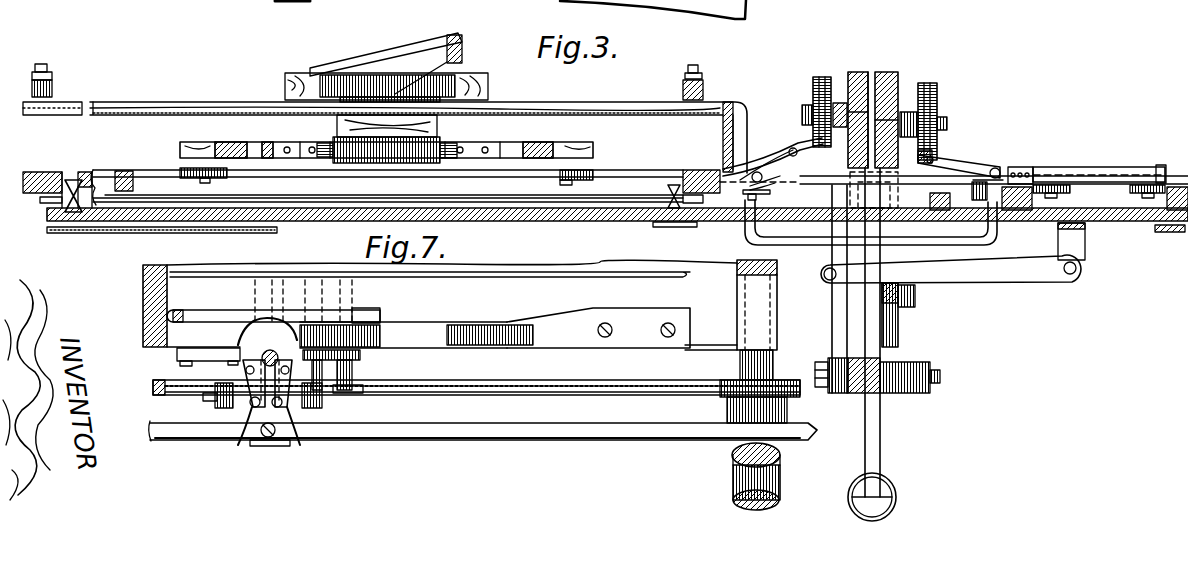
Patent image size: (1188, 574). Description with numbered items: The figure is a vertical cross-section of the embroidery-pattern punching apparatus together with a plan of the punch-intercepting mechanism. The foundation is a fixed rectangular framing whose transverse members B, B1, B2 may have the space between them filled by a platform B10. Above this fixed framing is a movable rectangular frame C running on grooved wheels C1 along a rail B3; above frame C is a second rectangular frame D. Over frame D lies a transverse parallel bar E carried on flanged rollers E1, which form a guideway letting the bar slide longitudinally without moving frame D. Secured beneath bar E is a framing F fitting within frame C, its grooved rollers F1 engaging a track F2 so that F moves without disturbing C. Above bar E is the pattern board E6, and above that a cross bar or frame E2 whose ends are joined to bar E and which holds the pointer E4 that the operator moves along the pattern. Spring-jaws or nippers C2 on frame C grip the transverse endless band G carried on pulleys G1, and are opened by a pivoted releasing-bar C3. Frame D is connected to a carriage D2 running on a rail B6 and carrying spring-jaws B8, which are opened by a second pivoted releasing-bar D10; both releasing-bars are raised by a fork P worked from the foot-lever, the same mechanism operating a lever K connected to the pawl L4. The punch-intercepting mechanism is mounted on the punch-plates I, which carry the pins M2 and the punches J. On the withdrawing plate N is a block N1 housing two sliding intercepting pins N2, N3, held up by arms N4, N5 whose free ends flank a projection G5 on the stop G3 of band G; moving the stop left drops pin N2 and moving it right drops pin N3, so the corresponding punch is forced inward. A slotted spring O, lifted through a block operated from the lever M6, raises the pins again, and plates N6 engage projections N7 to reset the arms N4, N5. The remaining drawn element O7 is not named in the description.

In FIG. 3, the flanged rollers E1 is at (72, 102).
In FIG. 3, the cross bar or frame E2 is at (288, 84).
In FIG. 3, the pointer E4 is at (397, 93).
In FIG. 3, the pattern board E6 is at (533, 106).
In FIG. 3, the transverse parallel bar E is at (437, 128).
In FIG. 3, the second rectangular frame D is at (180, 149).
In FIG. 3, the carriage D2 is at (1087, 177).
In FIG. 3, the pivoted releasing-bar D10 is at (1006, 217).
In FIG. 3, the framing F is at (384, 138).
In FIG. 3, the grooved rollers F1 is at (177, 172).
In FIG. 3, the track F2 is at (490, 170).
In FIG. 3, the movable rectangular frame C is at (701, 170).
In FIG. 3, the grooved wheels C1 is at (60, 223).
In FIG. 3, the spring-jaws or nippers C2 is at (773, 154).
In FIG. 3, the pivoted releasing-bar C3 is at (739, 222).
In FIG. 3, the transverse member B is at (75, 224).
In FIG. 3, the transverse member B1 is at (652, 228).
In FIG. 3, the transverse member B2 is at (1180, 233).
In FIG. 3, the rail B3 is at (1165, 150).
In FIG. 3, the rail B6 is at (1023, 167).
In FIG. 3, the spring-jaws B8 is at (973, 142).
In FIG. 3, the platform B10 is at (278, 223).
In FIG. 3, the pulleys G1 is at (813, 87).
In FIG. 3, the punch-plates I is at (862, 72).
In FIG. 7, the punch-plates I is at (590, 316).
In FIG. 3, the fork P is at (818, 239).
In FIG. 3, the lever K is at (1013, 279).
In FIG. 3, the pawl L4 is at (821, 289).
In FIG. 7, the slotted spring O is at (420, 337).
In FIG. 7, the rod head O7 is at (378, 322).
In FIG. 7, the plate N is at (515, 381).
In FIG. 7, the block N1 is at (223, 410).
In FIG. 7, the sliding intercepting pin N2 is at (254, 403).
In FIG. 7, the sliding intercepting pin N3 is at (321, 405).
In FIG. 7, the arm N4 is at (267, 413).
In FIG. 7, the arm N5 is at (288, 410).
In FIG. 7, the plates N6 is at (227, 357).
In FIG. 7, the projections N7 is at (215, 396).
In FIG. 7, the transverse endless band G is at (460, 431).
In FIG. 7, the stop G3 is at (265, 440).
In FIG. 7, the projection G5 is at (270, 438).
In FIG. 7, the punches J is at (353, 372).
In FIG. 7, the pins M2 is at (772, 385).
In FIG. 7, the lever M6 is at (873, 338).